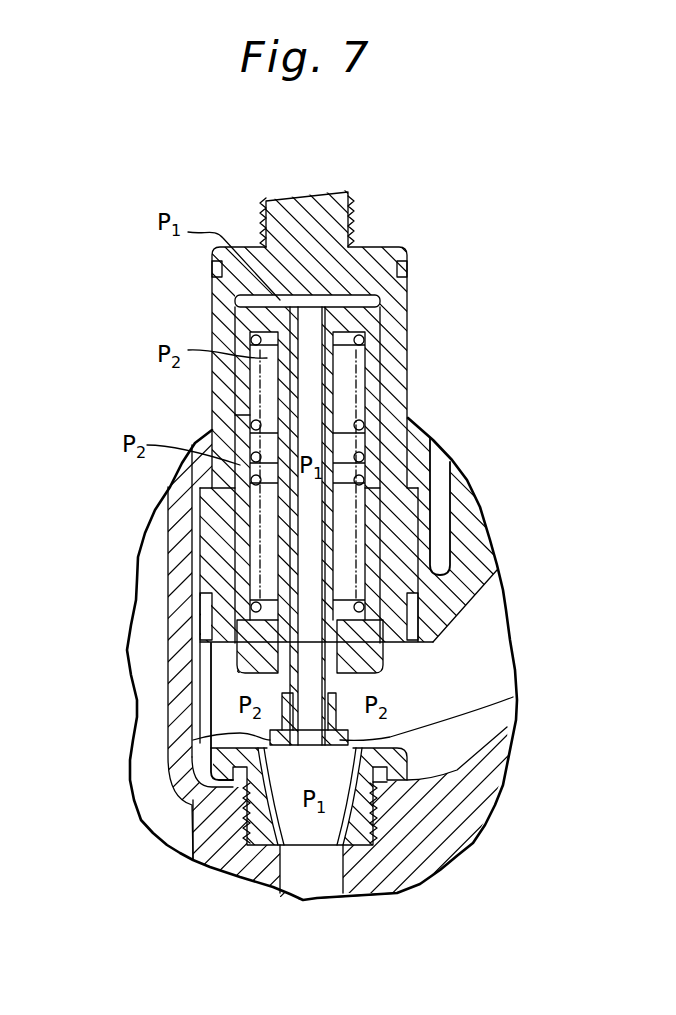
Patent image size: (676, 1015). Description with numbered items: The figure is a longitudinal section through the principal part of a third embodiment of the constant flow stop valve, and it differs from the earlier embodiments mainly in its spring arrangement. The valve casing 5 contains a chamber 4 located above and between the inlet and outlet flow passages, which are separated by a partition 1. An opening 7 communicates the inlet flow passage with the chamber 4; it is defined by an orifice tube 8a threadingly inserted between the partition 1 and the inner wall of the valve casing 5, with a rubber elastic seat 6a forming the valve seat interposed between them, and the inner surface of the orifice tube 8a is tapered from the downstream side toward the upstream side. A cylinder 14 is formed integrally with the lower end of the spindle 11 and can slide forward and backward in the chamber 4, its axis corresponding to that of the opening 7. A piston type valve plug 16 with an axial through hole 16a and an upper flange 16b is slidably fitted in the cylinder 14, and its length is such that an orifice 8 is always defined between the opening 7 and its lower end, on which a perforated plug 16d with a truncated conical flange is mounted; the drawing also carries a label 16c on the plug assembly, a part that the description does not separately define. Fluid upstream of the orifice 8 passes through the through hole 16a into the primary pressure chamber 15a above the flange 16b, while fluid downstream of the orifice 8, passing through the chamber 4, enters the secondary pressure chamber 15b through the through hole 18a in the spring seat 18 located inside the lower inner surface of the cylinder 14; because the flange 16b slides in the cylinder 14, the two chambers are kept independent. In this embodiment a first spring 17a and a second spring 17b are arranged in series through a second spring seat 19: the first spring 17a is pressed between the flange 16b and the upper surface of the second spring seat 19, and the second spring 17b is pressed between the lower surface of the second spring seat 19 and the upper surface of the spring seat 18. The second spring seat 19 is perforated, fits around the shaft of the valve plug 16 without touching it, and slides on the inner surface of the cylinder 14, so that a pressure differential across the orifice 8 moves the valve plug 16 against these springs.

The partition 1 is at (403, 817).
The chamber 4 is at (205, 653).
The valve casing 5 is at (210, 808).
The rubber elastic seat 6a is at (457, 770).
The opening 7 is at (255, 830).
The orifice 8 is at (193, 737).
The orifice tube 8a is at (397, 892).
The spindle 11 is at (320, 220).
The cylinder 14 is at (380, 248).
The primary pressure chamber 15a is at (367, 303).
The secondary pressure chamber 15b is at (270, 498).
The piston type valve plug 16 is at (335, 518).
The through hole 16a is at (312, 556).
The flange 16b is at (243, 320).
The seal ring 16c is at (372, 342).
The perforated plug 16d is at (517, 700).
The first spring 17a is at (407, 393).
The second spring 17b is at (452, 458).
The spring seat 18 is at (237, 640).
The through hole 18a is at (243, 678).
The second spring seat 19 is at (240, 414).